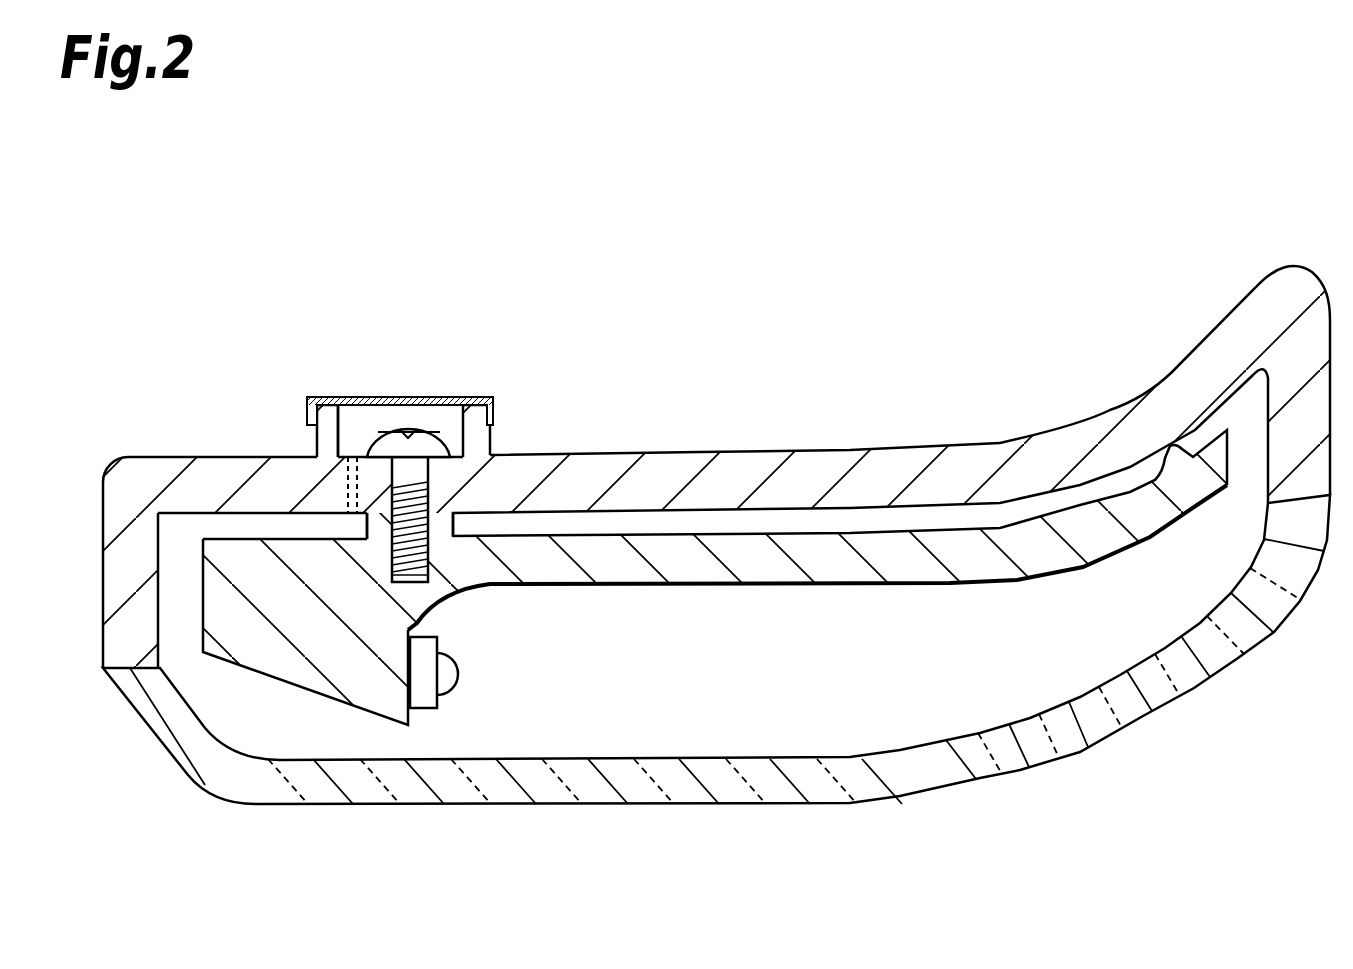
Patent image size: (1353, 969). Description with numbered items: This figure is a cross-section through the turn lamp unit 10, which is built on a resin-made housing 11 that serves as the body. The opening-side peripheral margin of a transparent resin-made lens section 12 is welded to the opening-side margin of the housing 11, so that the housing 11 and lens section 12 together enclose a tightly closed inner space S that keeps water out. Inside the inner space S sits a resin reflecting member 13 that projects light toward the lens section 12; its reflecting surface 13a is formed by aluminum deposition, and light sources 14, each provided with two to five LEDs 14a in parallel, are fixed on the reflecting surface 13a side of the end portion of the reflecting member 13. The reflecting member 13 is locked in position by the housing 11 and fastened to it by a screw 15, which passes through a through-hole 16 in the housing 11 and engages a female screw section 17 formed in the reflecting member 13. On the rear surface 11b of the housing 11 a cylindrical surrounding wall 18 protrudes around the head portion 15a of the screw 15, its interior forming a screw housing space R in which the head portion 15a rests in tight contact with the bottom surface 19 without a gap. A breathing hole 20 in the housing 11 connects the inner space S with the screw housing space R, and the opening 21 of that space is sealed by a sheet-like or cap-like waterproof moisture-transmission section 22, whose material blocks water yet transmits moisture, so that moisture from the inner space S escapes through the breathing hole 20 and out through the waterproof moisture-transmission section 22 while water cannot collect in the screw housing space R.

The turn lamp unit 10 is at (150, 303).
The housing 11 is at (905, 466).
The rear surface 11b is at (770, 455).
The lens section 12 is at (985, 762).
The reflecting member 13 is at (690, 550).
The reflecting surface 13a is at (975, 586).
The light source 14 is at (462, 650).
The LED 14a is at (456, 675).
The screw 15 is at (400, 525).
The head portion 15a is at (433, 442).
The through-hole 16 is at (433, 508).
The female screw section 17 is at (390, 565).
The surrounding wall 18 is at (330, 430).
The bottom surface 19 is at (362, 452).
The breathing hole 20 is at (352, 497).
The opening 21 is at (372, 418).
The waterproof moisture-transmission section 22 is at (415, 397).
The screw housing space R is at (433, 420).
The inner space S is at (746, 716).